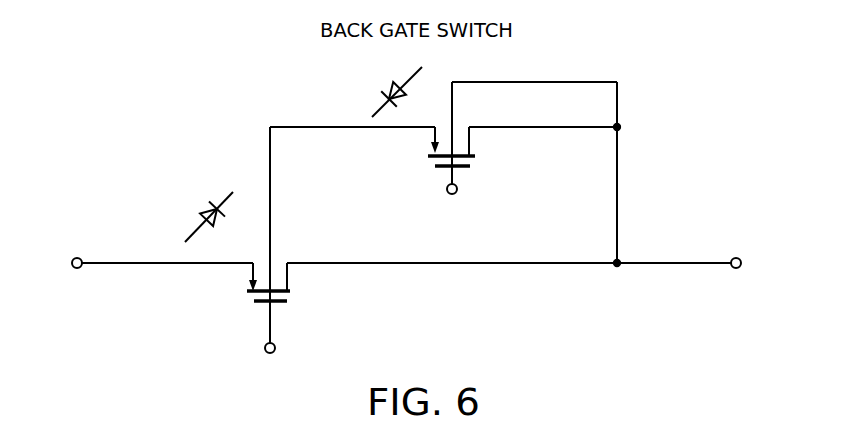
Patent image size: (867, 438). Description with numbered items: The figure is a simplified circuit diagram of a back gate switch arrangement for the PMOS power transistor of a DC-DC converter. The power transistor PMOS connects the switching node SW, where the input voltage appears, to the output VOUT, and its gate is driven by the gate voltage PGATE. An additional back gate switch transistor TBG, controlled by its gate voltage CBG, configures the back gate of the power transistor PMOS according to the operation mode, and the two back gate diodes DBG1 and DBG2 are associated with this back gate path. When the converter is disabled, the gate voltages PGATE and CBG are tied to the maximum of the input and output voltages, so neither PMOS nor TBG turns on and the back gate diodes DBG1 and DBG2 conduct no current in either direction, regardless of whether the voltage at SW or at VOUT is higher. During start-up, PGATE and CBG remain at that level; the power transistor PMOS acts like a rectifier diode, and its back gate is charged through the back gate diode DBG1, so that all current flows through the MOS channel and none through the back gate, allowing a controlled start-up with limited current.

The switching node SW is at (55, 263).
The output voltage VOUT is at (769, 265).
The PMOS power transistor PMOS is at (306, 235).
The gate voltage of the PMOS power transistor PGATE is at (269, 363).
The back gate switch transistor TBG is at (476, 133).
The gate voltage of the back gate switch transistor CBG is at (452, 203).
The back gate diode DBG1 is at (192, 213).
The back gate diode DBG2 is at (379, 88).